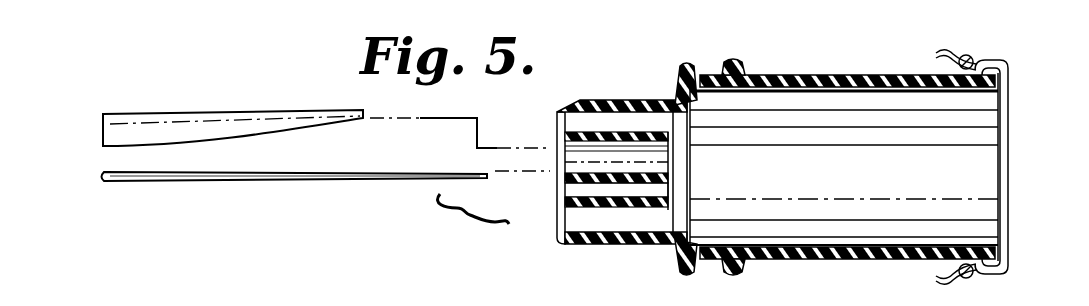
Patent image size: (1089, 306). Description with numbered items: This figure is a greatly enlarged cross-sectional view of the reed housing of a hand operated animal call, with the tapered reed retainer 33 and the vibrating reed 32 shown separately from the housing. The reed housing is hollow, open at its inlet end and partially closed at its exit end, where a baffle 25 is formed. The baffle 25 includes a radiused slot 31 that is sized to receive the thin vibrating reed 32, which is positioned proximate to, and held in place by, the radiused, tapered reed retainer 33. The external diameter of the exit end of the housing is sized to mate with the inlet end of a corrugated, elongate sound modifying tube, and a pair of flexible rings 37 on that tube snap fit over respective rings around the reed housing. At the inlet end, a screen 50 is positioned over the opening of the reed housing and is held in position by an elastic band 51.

The baffle 25 is at (640, 126).
The radiused slot 31 is at (591, 145).
The vibrating reed 32 is at (248, 176).
The tapered reed retainer 33 is at (236, 72).
The flexible rings 37 is at (426, 250).
The screen 50 is at (1012, 150).
The elastic band 51 is at (966, 55).